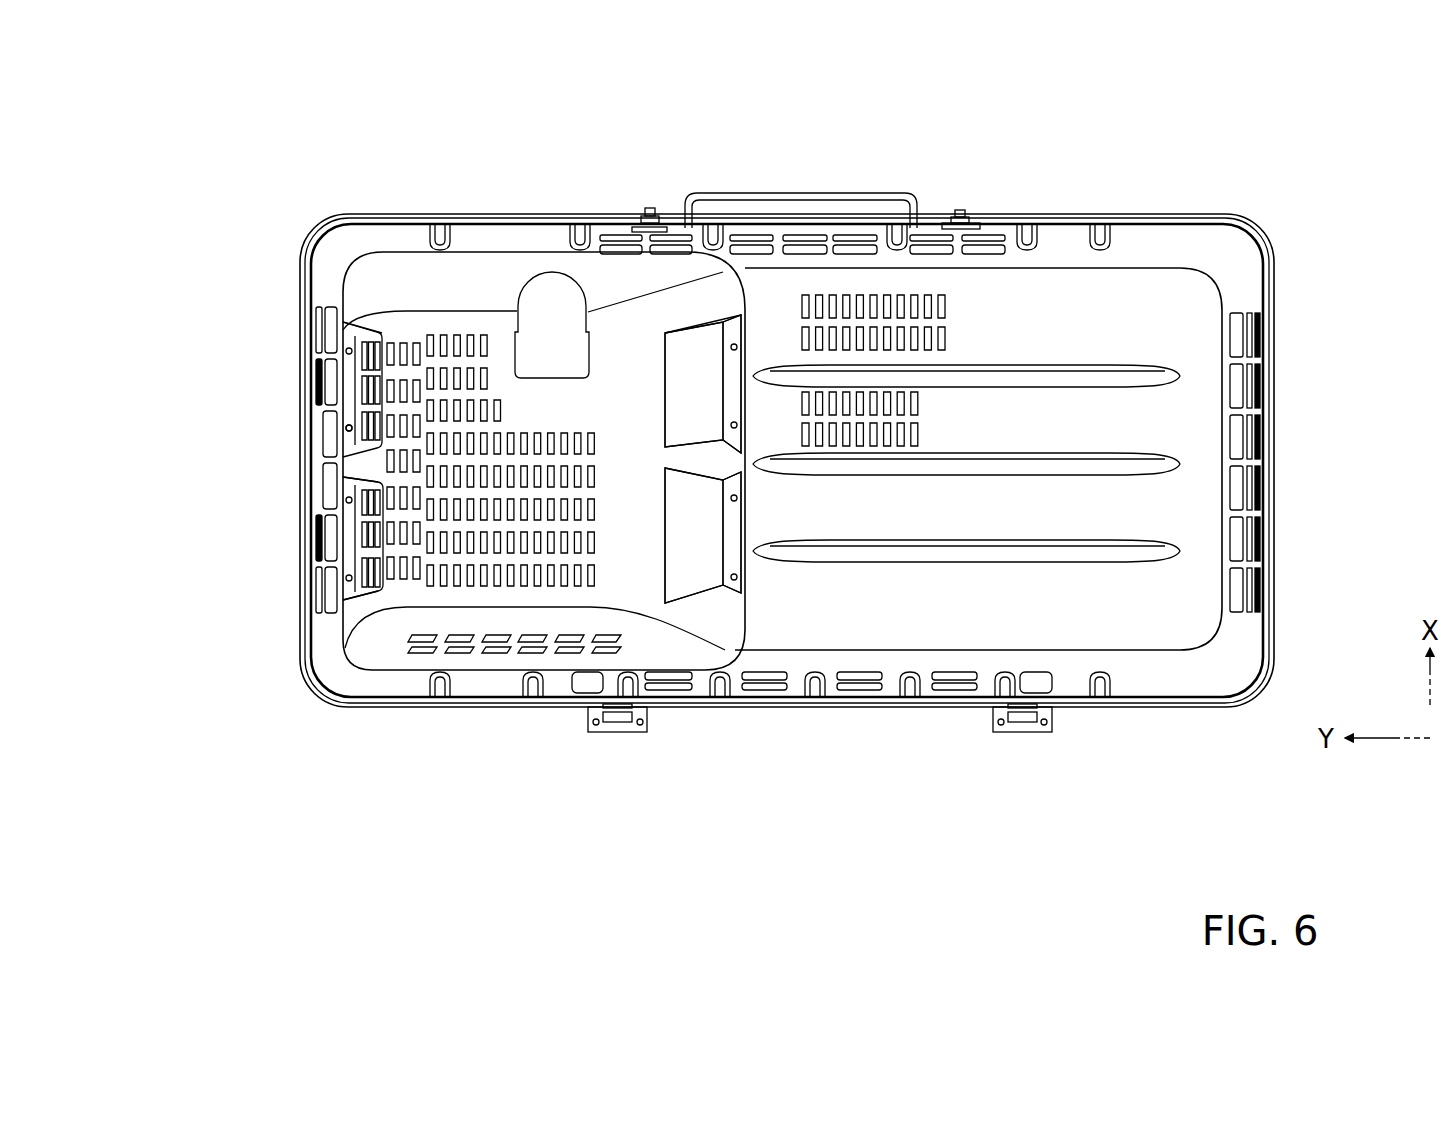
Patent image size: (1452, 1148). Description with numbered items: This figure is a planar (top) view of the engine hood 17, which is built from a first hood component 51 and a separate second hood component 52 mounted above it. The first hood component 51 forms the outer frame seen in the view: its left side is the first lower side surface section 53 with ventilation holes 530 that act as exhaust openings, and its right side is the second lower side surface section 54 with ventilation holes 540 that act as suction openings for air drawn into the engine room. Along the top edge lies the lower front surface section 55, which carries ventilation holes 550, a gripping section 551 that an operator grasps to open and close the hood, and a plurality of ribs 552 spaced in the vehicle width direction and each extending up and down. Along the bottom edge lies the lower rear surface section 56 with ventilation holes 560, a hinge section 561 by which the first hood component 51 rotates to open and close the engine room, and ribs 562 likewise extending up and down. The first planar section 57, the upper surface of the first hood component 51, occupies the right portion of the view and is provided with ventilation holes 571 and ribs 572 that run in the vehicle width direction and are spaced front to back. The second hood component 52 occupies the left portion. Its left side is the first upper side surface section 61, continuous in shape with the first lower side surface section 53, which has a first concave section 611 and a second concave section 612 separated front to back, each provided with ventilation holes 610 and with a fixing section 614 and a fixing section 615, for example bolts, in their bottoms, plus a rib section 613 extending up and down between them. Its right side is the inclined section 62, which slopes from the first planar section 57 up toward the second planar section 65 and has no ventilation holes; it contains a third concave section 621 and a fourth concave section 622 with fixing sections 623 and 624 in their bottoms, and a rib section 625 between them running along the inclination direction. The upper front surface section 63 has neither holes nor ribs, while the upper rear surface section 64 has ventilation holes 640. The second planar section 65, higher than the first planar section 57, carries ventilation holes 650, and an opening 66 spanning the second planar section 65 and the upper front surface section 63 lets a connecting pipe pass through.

The engine hood 17 is at (367, 171).
The first hood component 51 is at (1145, 199).
The second hood component 52 is at (488, 242).
The first lower side surface section 53 is at (332, 463).
The second lower side surface section 54 is at (1238, 462).
The lower front surface section 55 is at (830, 240).
The lower rear surface section 56 is at (800, 683).
The first planar section 57 is at (1057, 313).
The first upper side surface section 61 is at (363, 472).
The inclined section 62 is at (635, 493).
The upper front surface section 63 is at (453, 287).
The upper rear surface section 64 is at (437, 660).
The second planar section 65 is at (350, 335).
The opening 66 is at (537, 297).
The ventilation holes 530 is at (323, 433).
The ventilation holes 540 is at (1250, 388).
The ventilation holes 550 is at (793, 242).
The gripping section 551 is at (733, 225).
The ribs 552 is at (597, 243).
The ventilation holes 560 is at (767, 690).
The hinge section 561 is at (614, 728).
The ribs 562 is at (523, 685).
The ventilation holes 571 is at (866, 405).
The ribs 572 is at (987, 377).
The ventilation holes 610 is at (365, 385).
The first concave section 611 is at (360, 593).
The second concave section 612 is at (362, 357).
The rib section 613 is at (352, 467).
The fixing section 614 is at (335, 565).
The fixing section 615 is at (348, 426).
The third concave section 621 is at (685, 545).
The fourth concave section 622 is at (696, 367).
The fixing section 623 is at (737, 578).
The fixing section 624 is at (745, 346).
The rib section 625 is at (687, 363).
The ventilation holes 640 is at (489, 655).
The ventilation holes 650 is at (433, 636).